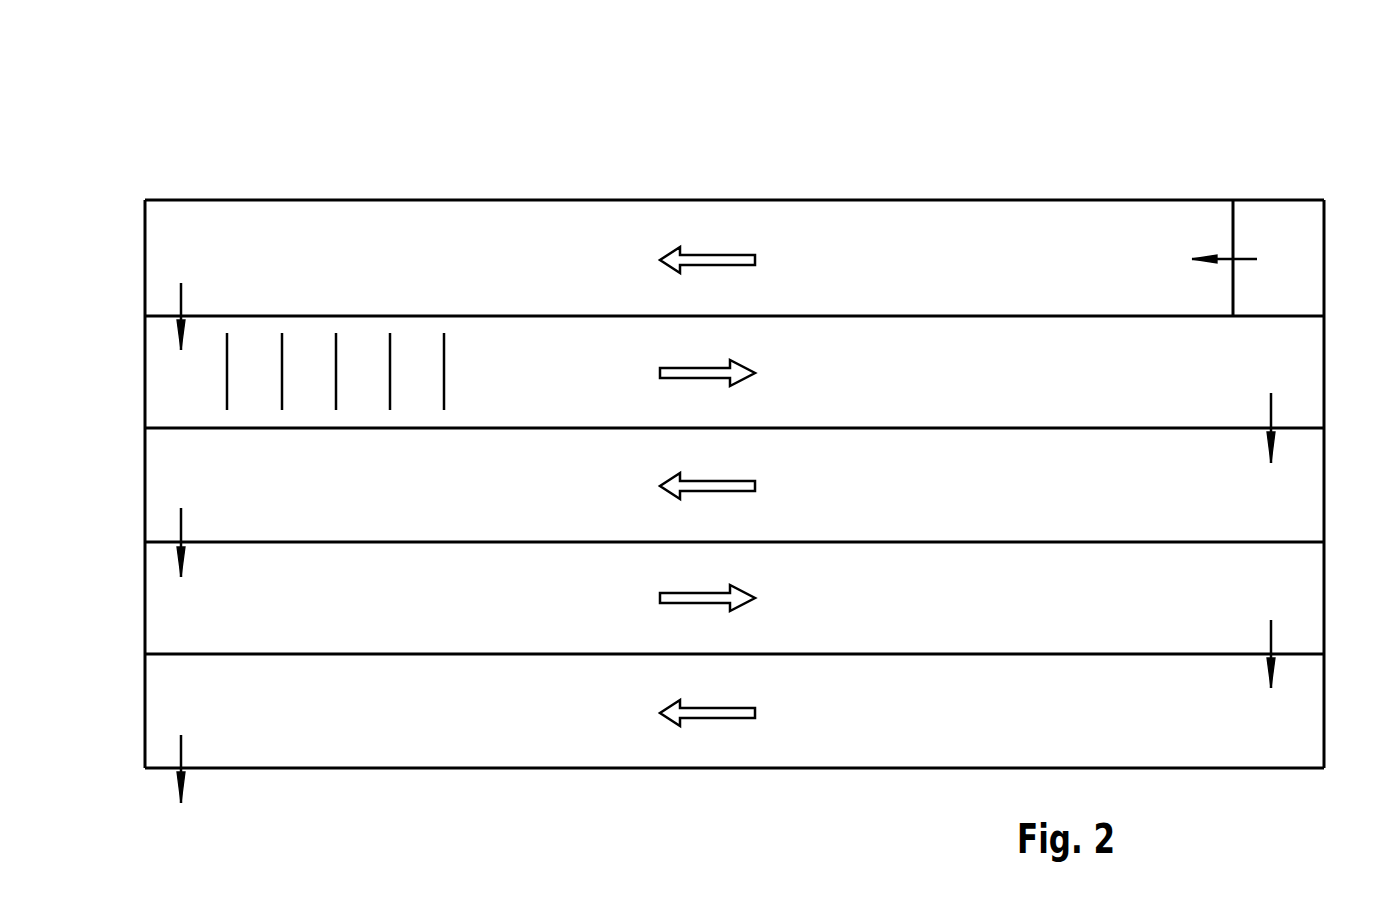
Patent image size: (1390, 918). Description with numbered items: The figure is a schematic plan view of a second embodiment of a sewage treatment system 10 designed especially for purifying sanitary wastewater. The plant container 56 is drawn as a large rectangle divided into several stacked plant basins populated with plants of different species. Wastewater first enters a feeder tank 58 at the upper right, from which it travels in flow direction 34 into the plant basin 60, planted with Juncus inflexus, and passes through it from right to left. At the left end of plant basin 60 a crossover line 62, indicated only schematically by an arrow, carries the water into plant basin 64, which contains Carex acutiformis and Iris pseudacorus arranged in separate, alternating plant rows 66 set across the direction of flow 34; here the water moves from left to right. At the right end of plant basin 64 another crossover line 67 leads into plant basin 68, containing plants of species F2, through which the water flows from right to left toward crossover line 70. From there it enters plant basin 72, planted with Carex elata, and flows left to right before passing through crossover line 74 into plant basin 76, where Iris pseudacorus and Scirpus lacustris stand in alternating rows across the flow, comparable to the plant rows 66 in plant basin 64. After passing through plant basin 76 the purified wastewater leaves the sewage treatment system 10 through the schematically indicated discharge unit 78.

The sewage treatment system 10 is at (1083, 143).
The flow direction 34 is at (702, 252).
The plant container 56 is at (768, 200).
The feeder tank 58 is at (1301, 270).
The plant basin 60 is at (893, 277).
The crossover line 62 is at (178, 303).
The plant basin 64 is at (893, 390).
The plant rows 66 is at (337, 372).
The crossover line 67 is at (1272, 408).
The plant basin 68 is at (893, 502).
The crossover line 70 is at (178, 522).
The plant basin 72 is at (893, 613).
The crossover line 74 is at (1272, 635).
The plant basin 76 is at (893, 728).
The discharge unit 78 is at (178, 748).